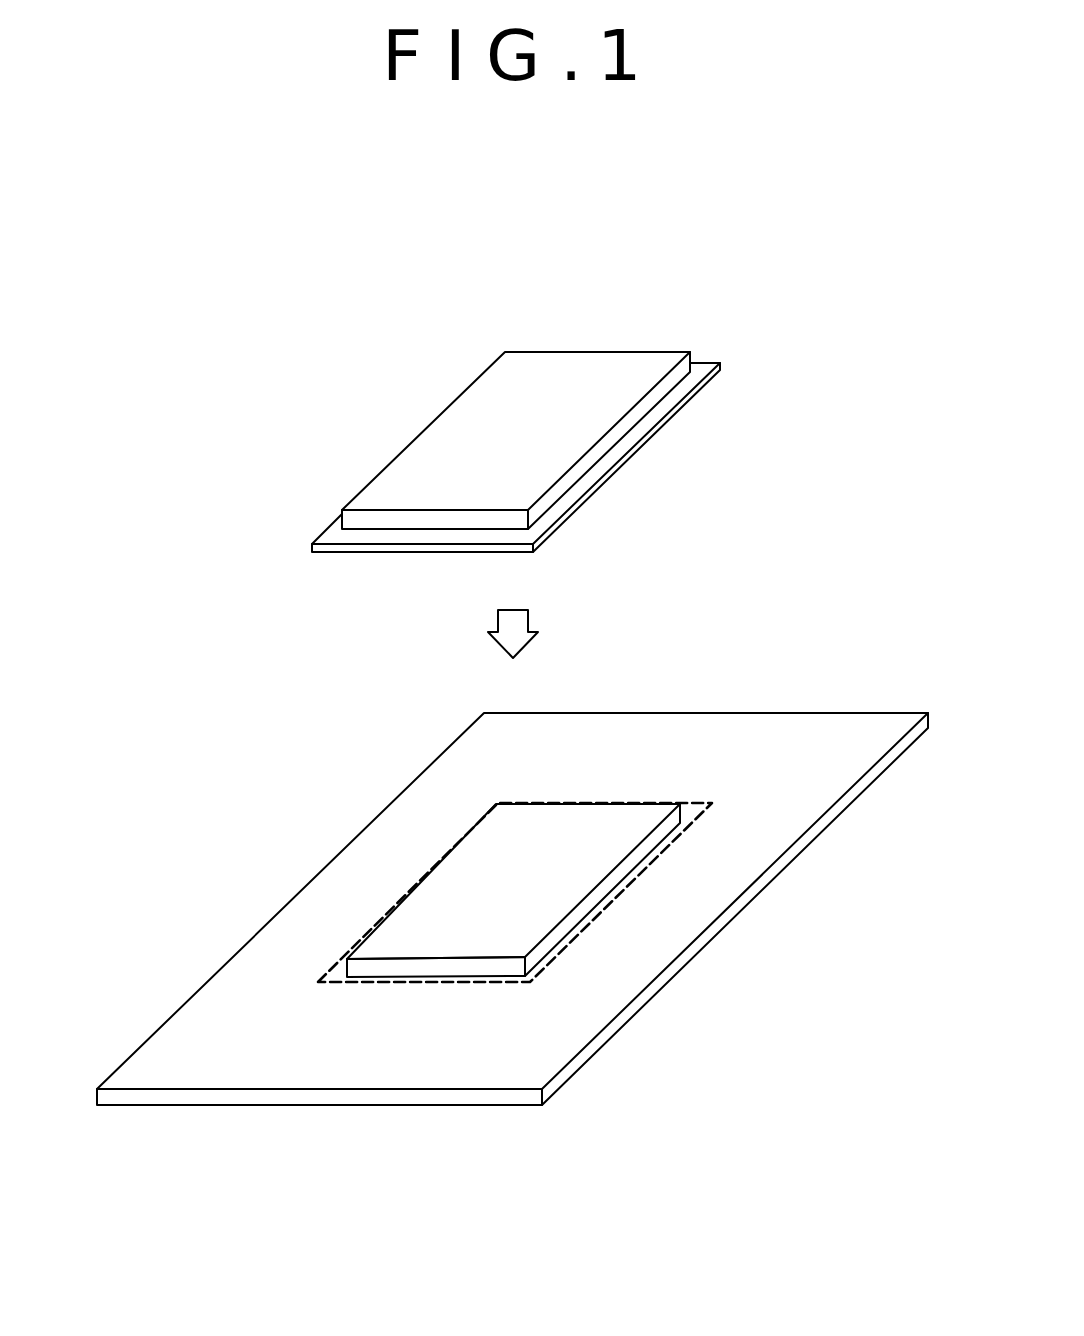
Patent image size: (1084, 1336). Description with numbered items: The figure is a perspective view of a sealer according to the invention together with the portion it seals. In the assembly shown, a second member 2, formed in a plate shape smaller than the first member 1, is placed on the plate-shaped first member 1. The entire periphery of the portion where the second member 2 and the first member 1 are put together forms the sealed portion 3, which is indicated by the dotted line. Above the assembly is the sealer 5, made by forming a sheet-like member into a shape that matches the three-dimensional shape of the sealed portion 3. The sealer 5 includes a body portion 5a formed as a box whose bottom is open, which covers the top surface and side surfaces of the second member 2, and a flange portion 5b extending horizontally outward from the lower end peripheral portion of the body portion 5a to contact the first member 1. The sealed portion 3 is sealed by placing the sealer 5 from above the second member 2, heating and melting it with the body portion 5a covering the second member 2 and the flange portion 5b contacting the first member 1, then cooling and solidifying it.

The first member 1 is at (237, 1065).
The second member 2 is at (477, 868).
The sealed portion 3 is at (603, 800).
The sealer 5 is at (499, 433).
The body portion 5a is at (465, 415).
The flange portion 5b is at (332, 537).